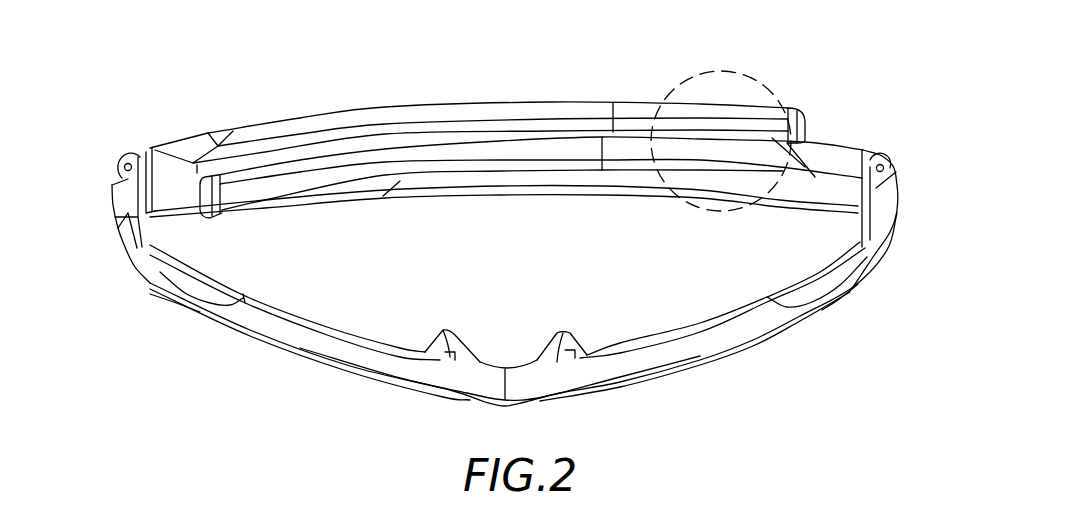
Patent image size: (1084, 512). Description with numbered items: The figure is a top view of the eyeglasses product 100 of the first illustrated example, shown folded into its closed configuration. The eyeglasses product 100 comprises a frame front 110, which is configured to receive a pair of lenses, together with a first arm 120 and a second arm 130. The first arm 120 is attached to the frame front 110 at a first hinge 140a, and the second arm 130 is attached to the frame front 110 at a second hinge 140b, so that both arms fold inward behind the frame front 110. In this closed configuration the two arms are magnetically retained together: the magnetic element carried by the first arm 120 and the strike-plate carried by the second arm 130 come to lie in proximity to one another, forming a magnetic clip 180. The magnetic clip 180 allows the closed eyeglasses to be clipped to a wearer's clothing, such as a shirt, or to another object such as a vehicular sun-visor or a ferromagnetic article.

The eyeglasses product 100 is at (192, 366).
The frame front 110 is at (538, 378).
The first arm 120 is at (598, 148).
The second arm 130 is at (397, 113).
The first hinge 140a is at (884, 167).
The second hinge 140b is at (124, 164).
The magnetic clip 180 is at (758, 75).